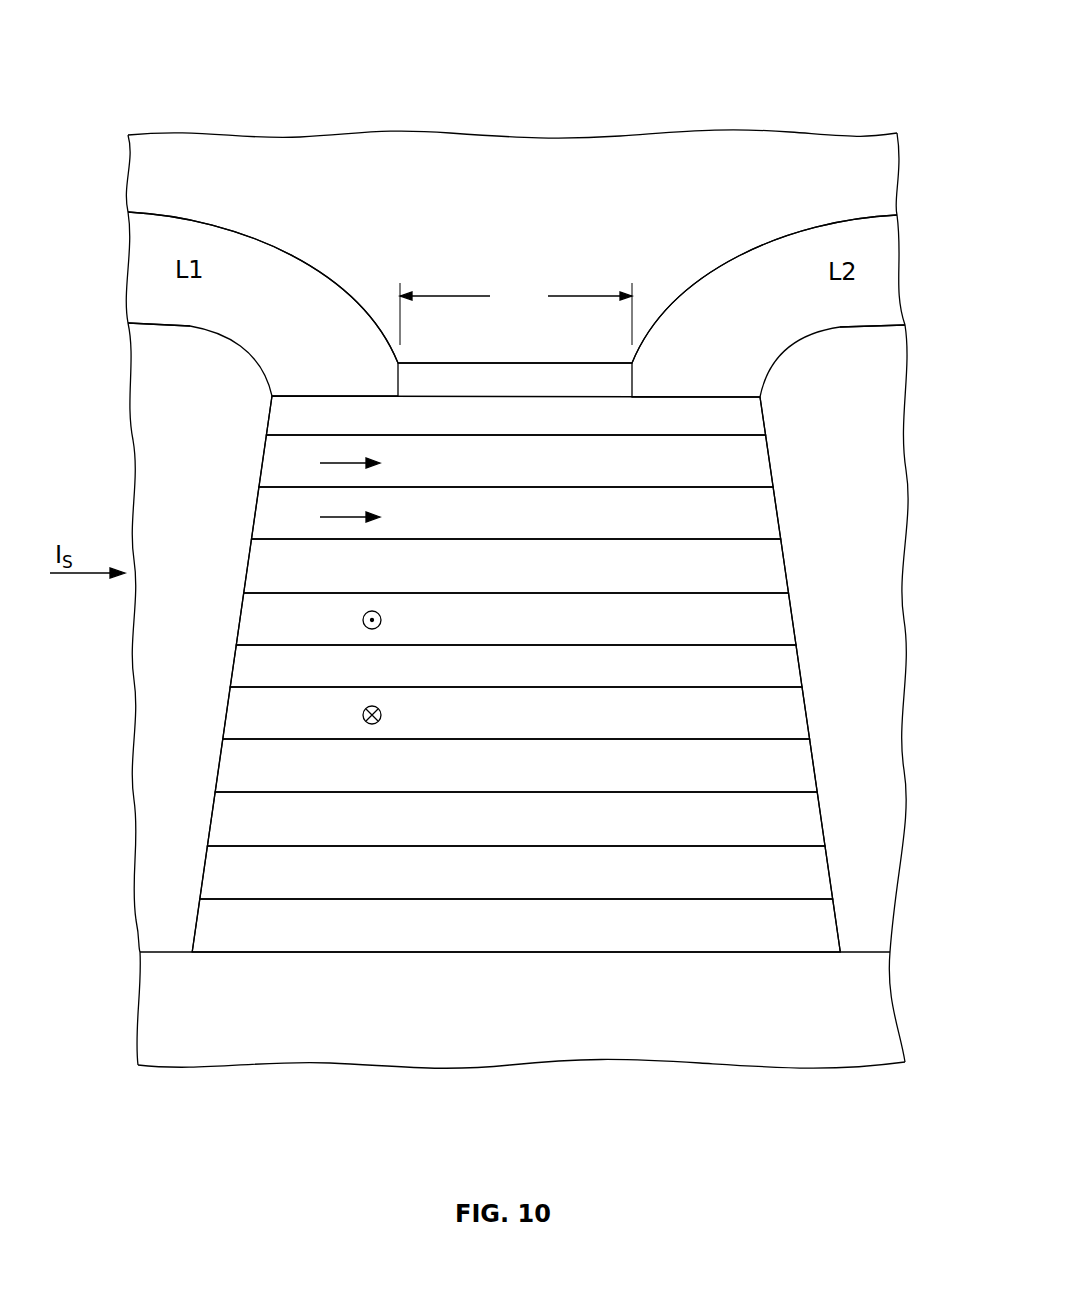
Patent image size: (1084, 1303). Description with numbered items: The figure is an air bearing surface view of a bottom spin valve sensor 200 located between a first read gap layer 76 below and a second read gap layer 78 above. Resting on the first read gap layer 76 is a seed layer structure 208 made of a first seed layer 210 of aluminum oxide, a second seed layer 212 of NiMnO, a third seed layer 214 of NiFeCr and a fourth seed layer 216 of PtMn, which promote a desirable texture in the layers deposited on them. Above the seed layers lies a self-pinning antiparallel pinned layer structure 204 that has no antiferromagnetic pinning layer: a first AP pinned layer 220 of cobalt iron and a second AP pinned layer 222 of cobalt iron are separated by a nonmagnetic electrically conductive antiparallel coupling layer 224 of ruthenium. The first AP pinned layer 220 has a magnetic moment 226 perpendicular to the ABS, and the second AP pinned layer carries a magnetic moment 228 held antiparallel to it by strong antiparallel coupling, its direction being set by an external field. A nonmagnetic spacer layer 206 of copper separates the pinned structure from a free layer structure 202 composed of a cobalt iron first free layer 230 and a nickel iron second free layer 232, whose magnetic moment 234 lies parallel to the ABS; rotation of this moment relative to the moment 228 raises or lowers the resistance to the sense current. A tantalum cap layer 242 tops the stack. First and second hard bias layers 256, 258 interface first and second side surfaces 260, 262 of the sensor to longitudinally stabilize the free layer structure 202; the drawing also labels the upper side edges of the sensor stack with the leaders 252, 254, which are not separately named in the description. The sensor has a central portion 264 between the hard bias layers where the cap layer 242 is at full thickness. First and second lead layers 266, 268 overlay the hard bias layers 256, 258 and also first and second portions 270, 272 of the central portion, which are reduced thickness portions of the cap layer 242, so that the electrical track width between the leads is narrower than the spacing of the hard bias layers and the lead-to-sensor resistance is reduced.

The first read gap layer 76 is at (624, 1024).
The second read gap layer 78 is at (600, 221).
The spin valve sensor 200 is at (935, 952).
The free layer structure 202 is at (76, 538).
The antiparallel (AP) pinned layer structure 204 is at (76, 593).
The spacer layer 206 is at (707, 584).
The seed layer structure 208 is at (117, 738).
The first seed layer 210 is at (707, 938).
The second seed layer 212 is at (707, 886).
The third seed layer 214 is at (707, 834).
The fourth seed layer 216 is at (707, 781).
The first AP pinned layer 220 is at (707, 729).
The second AP pinned layer 222 is at (707, 636).
The antiparallel coupling layer 224 is at (707, 679).
The magnetic moment of first AP pinned layer 226 is at (362, 715).
The magnetic moment of second AP pinned layer 228 is at (362, 620).
The first free layer 230 is at (707, 532).
The second free layer 232 is at (707, 479).
The magnetic moment of free layer structure 234 is at (327, 463).
The cap layer 242 is at (707, 429).
The first side edge of sensor 252 is at (262, 459).
The second side edge of sensor 254 is at (770, 458).
The first hard bias layer 256 is at (210, 526).
The second hard bias layer 258 is at (853, 526).
The first side surface 260 is at (240, 628).
The second side surface 262 is at (797, 633).
The central portion 264 is at (578, 363).
The first lead layer 266 is at (300, 265).
The second lead layer 268 is at (774, 252).
The first portion of central portion 270 is at (335, 396).
The second portion of central portion 272 is at (680, 396).